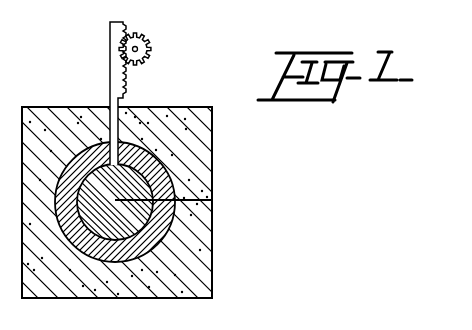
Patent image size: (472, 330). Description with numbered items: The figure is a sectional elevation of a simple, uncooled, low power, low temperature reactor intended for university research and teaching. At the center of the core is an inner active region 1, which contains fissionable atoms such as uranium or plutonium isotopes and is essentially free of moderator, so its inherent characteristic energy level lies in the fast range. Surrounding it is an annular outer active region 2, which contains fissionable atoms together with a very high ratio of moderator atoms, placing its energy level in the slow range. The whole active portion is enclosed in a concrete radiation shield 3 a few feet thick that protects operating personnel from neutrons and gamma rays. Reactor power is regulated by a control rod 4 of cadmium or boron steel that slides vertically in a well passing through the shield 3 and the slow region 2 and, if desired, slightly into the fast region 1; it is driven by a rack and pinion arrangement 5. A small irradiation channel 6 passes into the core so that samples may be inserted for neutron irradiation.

The inner active region 1 is at (97, 198).
The outer active region 2 is at (167, 190).
The radiation shield 3 is at (187, 137).
The control rod 4 is at (110, 68).
The rack and pinion arrangement 5 is at (126, 32).
The irradiation channel 6 is at (199, 198).